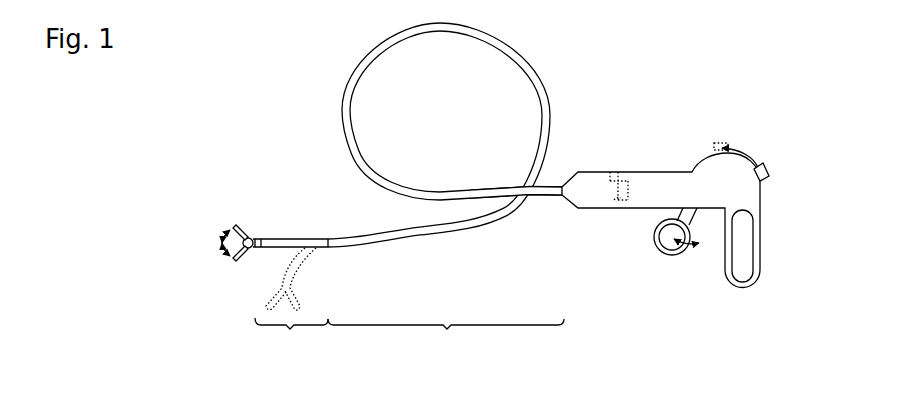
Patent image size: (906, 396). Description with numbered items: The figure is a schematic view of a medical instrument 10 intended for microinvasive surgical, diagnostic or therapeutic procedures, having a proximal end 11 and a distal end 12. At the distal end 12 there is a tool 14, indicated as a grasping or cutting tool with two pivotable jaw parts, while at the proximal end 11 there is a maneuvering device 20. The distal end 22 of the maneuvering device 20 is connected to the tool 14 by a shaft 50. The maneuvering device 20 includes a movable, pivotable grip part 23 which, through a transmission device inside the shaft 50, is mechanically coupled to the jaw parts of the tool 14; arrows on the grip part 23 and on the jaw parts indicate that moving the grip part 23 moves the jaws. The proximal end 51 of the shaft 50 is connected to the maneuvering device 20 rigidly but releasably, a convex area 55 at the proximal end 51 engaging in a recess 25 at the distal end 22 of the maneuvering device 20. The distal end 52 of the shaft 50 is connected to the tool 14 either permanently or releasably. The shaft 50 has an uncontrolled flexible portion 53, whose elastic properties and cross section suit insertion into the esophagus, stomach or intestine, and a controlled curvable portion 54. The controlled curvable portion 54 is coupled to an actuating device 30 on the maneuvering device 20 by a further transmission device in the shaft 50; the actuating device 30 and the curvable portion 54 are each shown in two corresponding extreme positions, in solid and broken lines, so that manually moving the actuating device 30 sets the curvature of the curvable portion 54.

The medical instrument 10 is at (276, 58).
The proximal end 11 is at (759, 70).
The distal end 12 is at (241, 165).
The tool 14 is at (251, 237).
The maneuvering device 20 is at (667, 172).
The distal end of the maneuvering device 22 is at (620, 172).
The grip part 23 is at (674, 256).
The recess 25 is at (620, 202).
The actuating device 30 is at (762, 166).
The shaft 50 is at (538, 74).
The proximal end of the shaft 51 is at (610, 172).
The distal end of the shaft 52 is at (262, 238).
The uncontrolled flexible portion 53 is at (446, 338).
The controlled curvable portion 54 is at (291, 299).
The convex area 55 is at (616, 200).